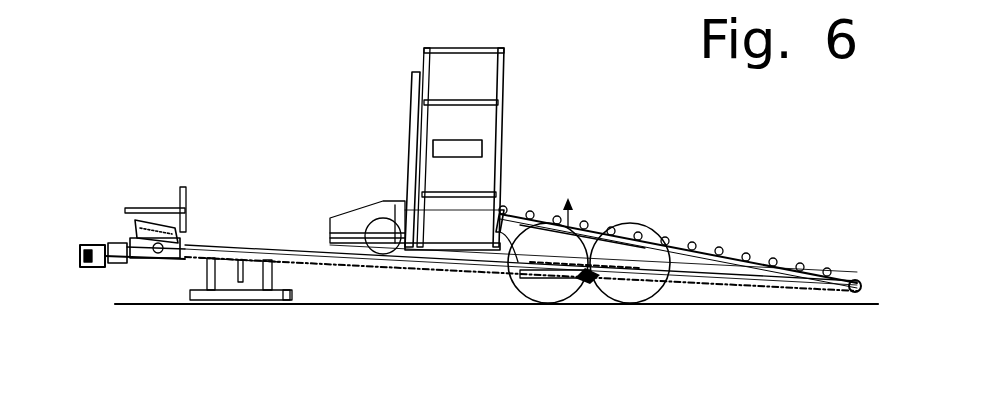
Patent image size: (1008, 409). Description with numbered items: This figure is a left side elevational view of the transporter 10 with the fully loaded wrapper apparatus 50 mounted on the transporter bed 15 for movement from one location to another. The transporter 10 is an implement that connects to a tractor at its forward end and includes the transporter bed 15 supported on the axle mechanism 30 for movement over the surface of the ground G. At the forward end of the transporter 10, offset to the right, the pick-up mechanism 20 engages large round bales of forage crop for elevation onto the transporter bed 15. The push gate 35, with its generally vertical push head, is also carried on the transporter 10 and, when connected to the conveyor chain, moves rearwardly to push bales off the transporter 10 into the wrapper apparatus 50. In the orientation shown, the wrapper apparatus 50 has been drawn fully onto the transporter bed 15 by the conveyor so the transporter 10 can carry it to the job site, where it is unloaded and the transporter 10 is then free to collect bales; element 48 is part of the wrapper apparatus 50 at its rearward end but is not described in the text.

The transporter 10 is at (206, 145).
The transporter bed 15 is at (305, 250).
The pick-up mechanism 20 is at (243, 325).
The axle mechanism 30 is at (591, 250).
The push gate 35 is at (163, 205).
The roller conveyor section 48 is at (857, 278).
The wrapper apparatus 50 is at (408, 122).
The ground G is at (872, 304).